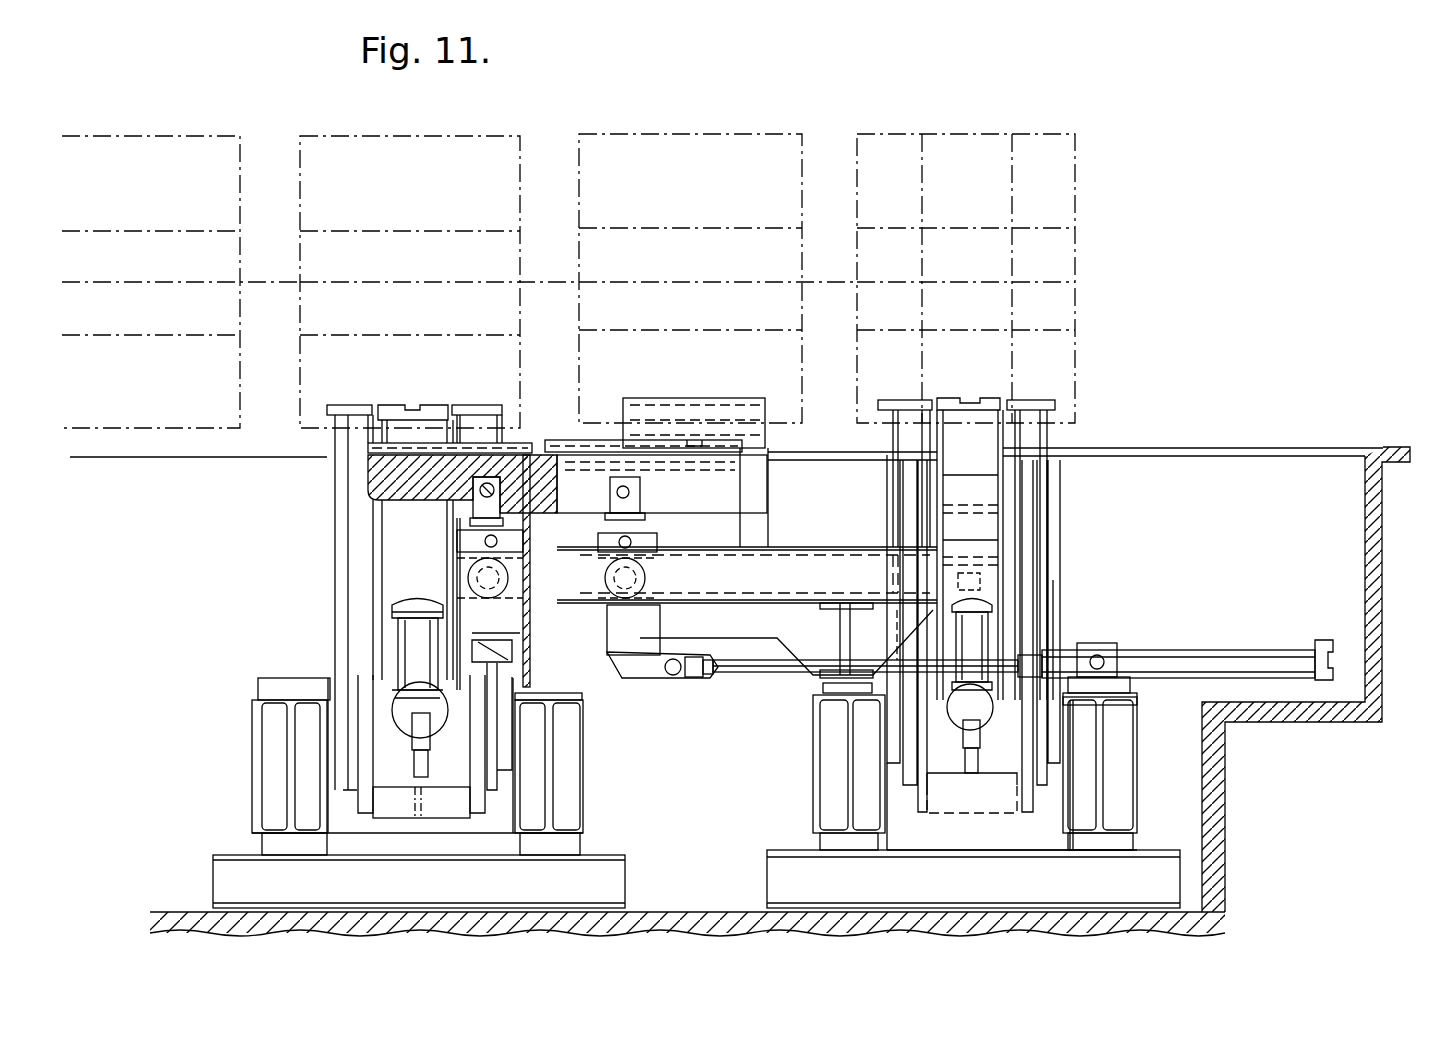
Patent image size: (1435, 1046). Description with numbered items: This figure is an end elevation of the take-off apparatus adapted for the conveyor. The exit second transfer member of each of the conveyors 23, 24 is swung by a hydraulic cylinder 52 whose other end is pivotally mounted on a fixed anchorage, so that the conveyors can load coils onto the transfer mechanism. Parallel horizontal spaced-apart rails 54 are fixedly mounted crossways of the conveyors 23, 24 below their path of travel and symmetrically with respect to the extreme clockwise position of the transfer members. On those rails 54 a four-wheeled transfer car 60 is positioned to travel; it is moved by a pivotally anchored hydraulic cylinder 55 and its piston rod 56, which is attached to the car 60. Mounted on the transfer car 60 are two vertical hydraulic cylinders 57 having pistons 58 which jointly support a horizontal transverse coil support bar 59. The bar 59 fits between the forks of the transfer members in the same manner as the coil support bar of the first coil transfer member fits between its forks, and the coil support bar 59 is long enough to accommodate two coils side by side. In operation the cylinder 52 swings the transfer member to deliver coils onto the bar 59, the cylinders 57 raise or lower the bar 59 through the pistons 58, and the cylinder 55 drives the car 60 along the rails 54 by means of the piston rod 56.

The conveyor 23 is at (300, 420).
The conveyor 24 is at (1092, 387).
The hydraulic cylinder 52 is at (407, 642).
The rails 54 is at (793, 583).
The hydraulic cylinder 55 is at (1163, 657).
The piston rod 56 is at (787, 665).
The vertical hydraulic cylinders 57 is at (485, 541).
The pistons 58 is at (470, 512).
The coil support bar 59 is at (368, 457).
The transfer car 60 is at (468, 578).